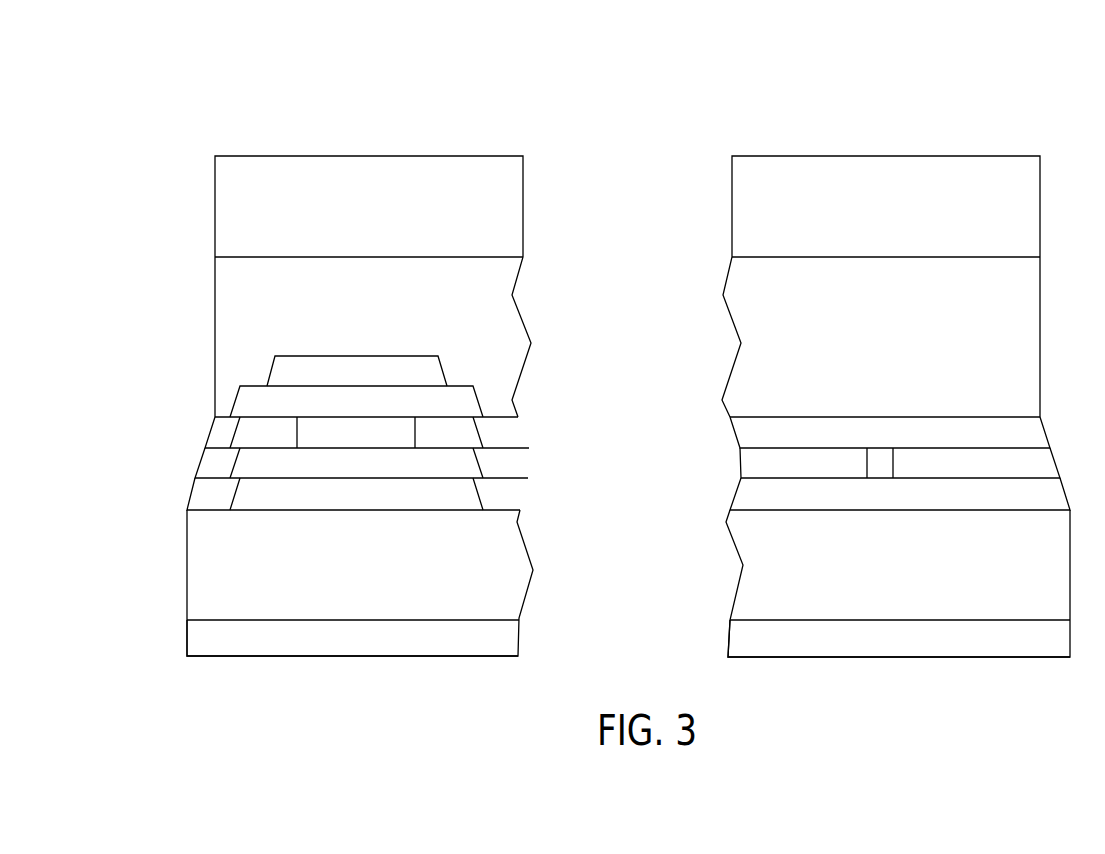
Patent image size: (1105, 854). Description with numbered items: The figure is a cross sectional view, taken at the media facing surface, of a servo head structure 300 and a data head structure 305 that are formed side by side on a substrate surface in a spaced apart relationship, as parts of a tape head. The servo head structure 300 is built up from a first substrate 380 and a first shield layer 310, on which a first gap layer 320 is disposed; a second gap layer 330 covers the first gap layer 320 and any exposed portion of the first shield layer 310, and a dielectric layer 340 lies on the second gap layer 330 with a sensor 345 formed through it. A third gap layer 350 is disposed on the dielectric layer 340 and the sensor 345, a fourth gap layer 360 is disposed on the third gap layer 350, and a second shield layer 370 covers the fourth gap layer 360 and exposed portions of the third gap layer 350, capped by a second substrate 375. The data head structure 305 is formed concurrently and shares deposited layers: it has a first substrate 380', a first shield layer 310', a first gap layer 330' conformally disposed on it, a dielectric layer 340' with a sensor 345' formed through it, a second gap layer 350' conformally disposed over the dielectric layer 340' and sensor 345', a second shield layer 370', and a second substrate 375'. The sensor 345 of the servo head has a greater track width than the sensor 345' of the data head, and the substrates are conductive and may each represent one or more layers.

The servo head structure 300 is at (512, 95).
The data head structure 305 is at (748, 98).
The first shield layer 310 is at (396, 592).
The first shield layer 310' is at (860, 585).
The first gap layer 320 is at (377, 505).
The second gap layer 330 is at (396, 480).
The first gap layer 330' is at (859, 501).
The dielectric layer 340 is at (405, 442).
The dielectric layer 340' is at (852, 467).
The sensor 345 is at (274, 429).
The sensor 345' is at (877, 417).
The third gap layer 350 is at (409, 409).
The second gap layer 350' is at (846, 433).
The fourth gap layer 360 is at (428, 368).
The second shield layer 370 is at (330, 353).
The second shield layer 370' is at (836, 368).
The second substrate 375 is at (333, 213).
The second substrate 375' is at (836, 225).
The first substrate 380 is at (352, 638).
The first substrate 380' is at (899, 638).